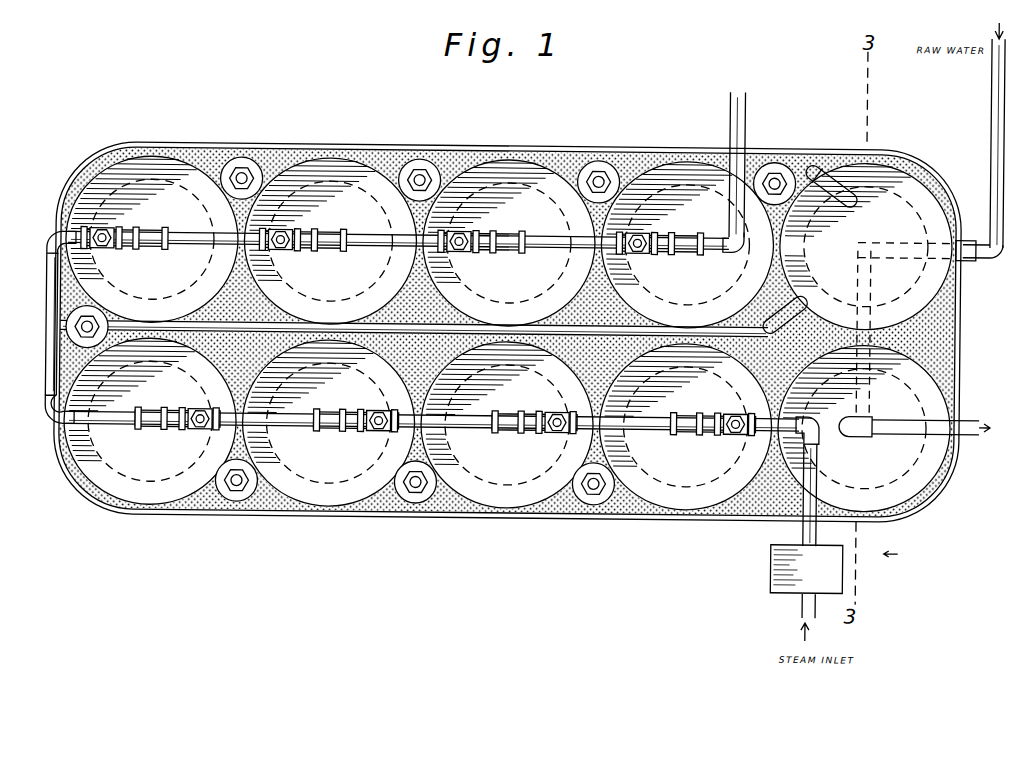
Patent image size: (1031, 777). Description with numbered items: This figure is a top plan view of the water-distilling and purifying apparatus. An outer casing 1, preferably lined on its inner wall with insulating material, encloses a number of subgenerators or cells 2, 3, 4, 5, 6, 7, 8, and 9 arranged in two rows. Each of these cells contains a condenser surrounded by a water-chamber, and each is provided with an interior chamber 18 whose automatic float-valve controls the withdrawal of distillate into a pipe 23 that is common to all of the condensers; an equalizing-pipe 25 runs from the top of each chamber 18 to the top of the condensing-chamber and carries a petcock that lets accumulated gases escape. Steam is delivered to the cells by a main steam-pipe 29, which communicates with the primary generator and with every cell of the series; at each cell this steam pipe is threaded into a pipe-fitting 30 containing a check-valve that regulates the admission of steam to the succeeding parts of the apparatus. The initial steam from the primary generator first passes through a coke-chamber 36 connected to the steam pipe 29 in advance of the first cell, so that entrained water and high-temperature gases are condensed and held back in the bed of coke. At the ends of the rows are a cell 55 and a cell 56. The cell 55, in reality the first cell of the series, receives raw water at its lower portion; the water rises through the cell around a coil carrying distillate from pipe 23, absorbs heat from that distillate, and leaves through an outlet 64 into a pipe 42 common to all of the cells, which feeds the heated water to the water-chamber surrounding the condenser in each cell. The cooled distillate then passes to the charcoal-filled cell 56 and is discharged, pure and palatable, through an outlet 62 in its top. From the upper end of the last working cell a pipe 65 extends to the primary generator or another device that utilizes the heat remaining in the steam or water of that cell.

The outer casing 1 is at (312, 153).
The cell 2 is at (686, 427).
The cell 3 is at (507, 425).
The cell 4 is at (329, 423).
The cell 5 is at (150, 421).
The cell 6 is at (152, 239).
The cell 7 is at (331, 241).
The cell 8 is at (509, 243).
The cell 9 is at (688, 245).
The interior chamber 18 is at (242, 160).
The pipe 23 is at (645, 166).
The equalizing-pipe 25 is at (425, 163).
The main steam-pipe 29 is at (46, 281).
The pipe-fitting 30 is at (112, 235).
The coke-receptacle 36 is at (781, 568).
The pipe 42 is at (408, 327).
The cell 55 is at (900, 183).
The cell 56 is at (915, 393).
The outlet 62 is at (868, 415).
The outlet 64 is at (798, 312).
The pipe 65 is at (750, 172).